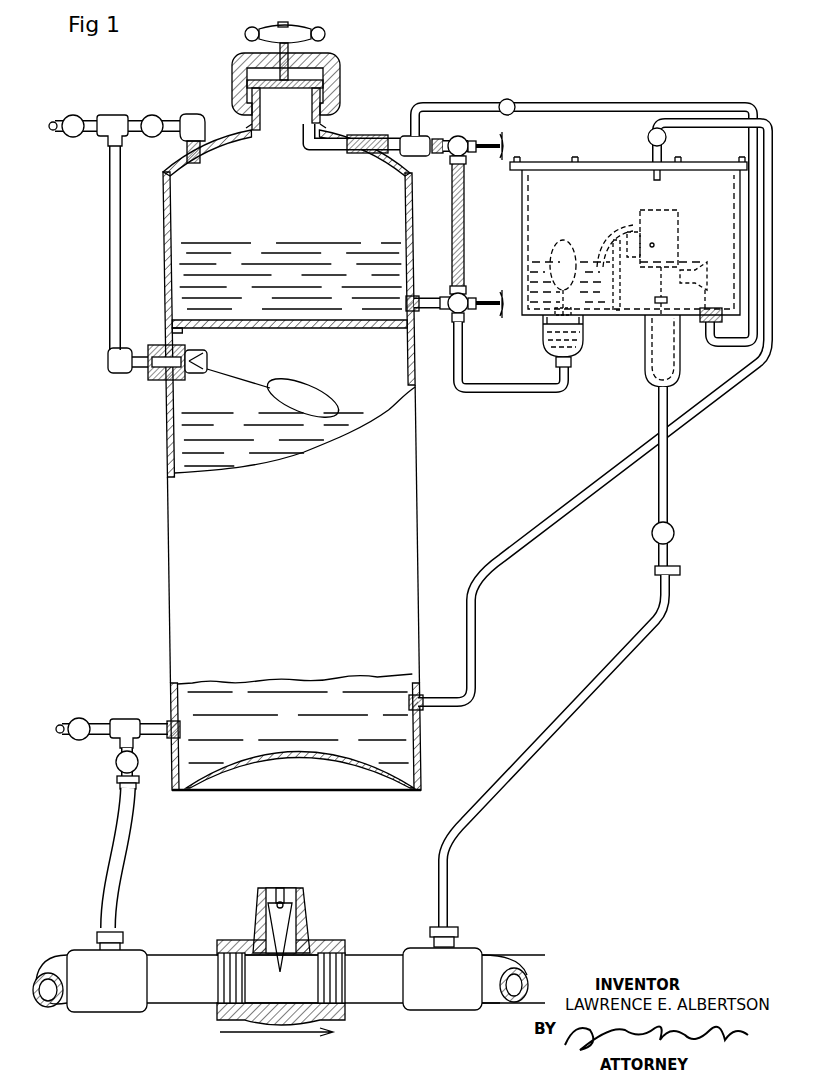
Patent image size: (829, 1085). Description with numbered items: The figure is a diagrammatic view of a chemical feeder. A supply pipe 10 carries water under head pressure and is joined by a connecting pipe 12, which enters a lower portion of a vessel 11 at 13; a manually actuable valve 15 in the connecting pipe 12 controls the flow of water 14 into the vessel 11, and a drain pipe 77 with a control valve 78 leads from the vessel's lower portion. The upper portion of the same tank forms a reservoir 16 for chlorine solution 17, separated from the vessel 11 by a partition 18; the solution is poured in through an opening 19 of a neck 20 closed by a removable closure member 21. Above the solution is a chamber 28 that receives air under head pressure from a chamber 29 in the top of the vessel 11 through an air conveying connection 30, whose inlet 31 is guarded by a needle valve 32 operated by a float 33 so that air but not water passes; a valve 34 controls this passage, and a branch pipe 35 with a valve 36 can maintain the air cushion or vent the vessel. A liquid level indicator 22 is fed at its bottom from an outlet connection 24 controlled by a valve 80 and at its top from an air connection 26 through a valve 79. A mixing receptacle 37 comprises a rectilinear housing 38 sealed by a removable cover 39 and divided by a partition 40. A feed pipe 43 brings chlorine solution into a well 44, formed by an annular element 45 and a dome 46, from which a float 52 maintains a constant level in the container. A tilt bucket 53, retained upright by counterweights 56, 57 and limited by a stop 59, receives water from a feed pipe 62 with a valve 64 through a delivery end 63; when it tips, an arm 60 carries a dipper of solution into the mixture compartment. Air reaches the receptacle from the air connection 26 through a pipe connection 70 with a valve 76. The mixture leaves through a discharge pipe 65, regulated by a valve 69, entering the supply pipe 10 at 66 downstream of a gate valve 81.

The supply pipe 10 is at (186, 1006).
The vessel 11 is at (169, 596).
The connecting pipe 12 is at (122, 853).
The entry location of connecting pipe 13 is at (182, 729).
The liquid or water 14 is at (200, 441).
The manually actuable valve 15 is at (115, 766).
The reservoir 16 is at (165, 257).
The liquid or chlorine solution 17 is at (186, 280).
The partition 18 is at (310, 329).
The opening 19 is at (300, 112).
The neck 20 is at (250, 124).
The removable closure member 21 is at (238, 60).
The liquid level indicator 22 is at (463, 207).
The outlet connection 24 is at (422, 316).
The air connection 26 is at (330, 148).
The chamber 28 is at (298, 191).
The chamber 29 is at (292, 359).
The air conveying connection 30 is at (111, 268).
The inlet 31 is at (163, 381).
The needle valve 32 is at (195, 358).
The float 33 is at (303, 393).
The manually actuable valve 34 is at (163, 116).
The branch pipe 35 is at (52, 122).
The manually actuable valve 36 is at (81, 138).
The mixing receptacle 37 is at (595, 162).
The rectilinear housing 38 is at (522, 235).
The removable cover 39 is at (575, 158).
The partition 40 is at (622, 291).
The feed pipe 43 is at (492, 390).
The well 44 is at (581, 342).
The annular element 45 is at (584, 324).
The dome 46 is at (571, 363).
The float 52 is at (563, 248).
The tilt bucket 53 is at (672, 227).
The counterweight 56 is at (637, 255).
The counterweight 57 is at (667, 291).
The stop 59 is at (705, 282).
The arm 60 is at (600, 226).
The liquid or water feed pipe 62 is at (548, 535).
The delivery end 63 is at (660, 178).
The manually actuable valve 64 is at (667, 140).
The discharge pipe 65 is at (656, 650).
The entry location of discharge pipe 66 is at (457, 938).
The manually actuable valve 69 is at (676, 533).
The pipe connection 70 is at (560, 103).
The manually actuable valve 76 is at (514, 102).
The drain pipe 77 is at (63, 735).
The manually actuable control valve 78 is at (85, 718).
The manually actuable valve 79 is at (495, 142).
The manually actuable valve 80 is at (502, 318).
The manually actuable valve 81 is at (305, 931).